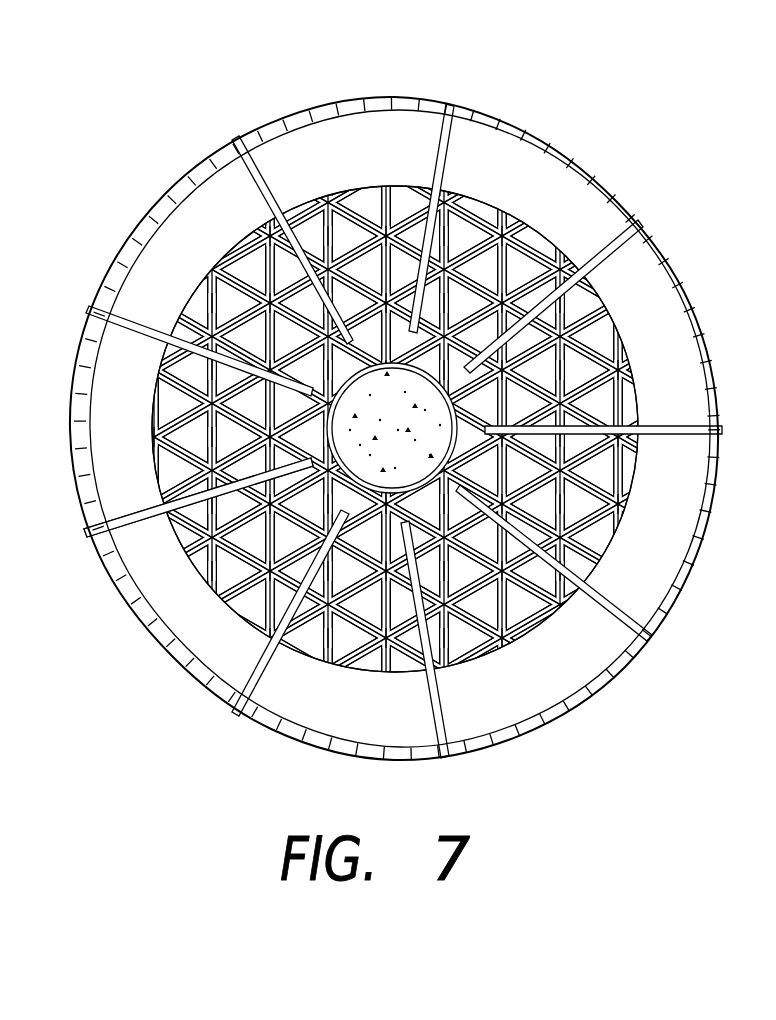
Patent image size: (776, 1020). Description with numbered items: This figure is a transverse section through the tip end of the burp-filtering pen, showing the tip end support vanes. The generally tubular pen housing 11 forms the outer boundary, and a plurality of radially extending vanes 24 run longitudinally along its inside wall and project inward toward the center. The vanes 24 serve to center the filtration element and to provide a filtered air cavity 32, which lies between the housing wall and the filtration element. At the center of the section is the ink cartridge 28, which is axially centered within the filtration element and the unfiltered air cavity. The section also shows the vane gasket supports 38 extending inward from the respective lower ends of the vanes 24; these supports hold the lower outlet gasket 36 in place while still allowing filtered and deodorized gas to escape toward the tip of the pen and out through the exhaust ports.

The pen housing 11 is at (590, 163).
The vanes 24 is at (447, 140).
The ink cartridge 28 is at (358, 397).
The filtered air cavity 32 is at (665, 558).
The lower outlet gasket 36 is at (589, 386).
The vane gasket supports 38 is at (322, 468).